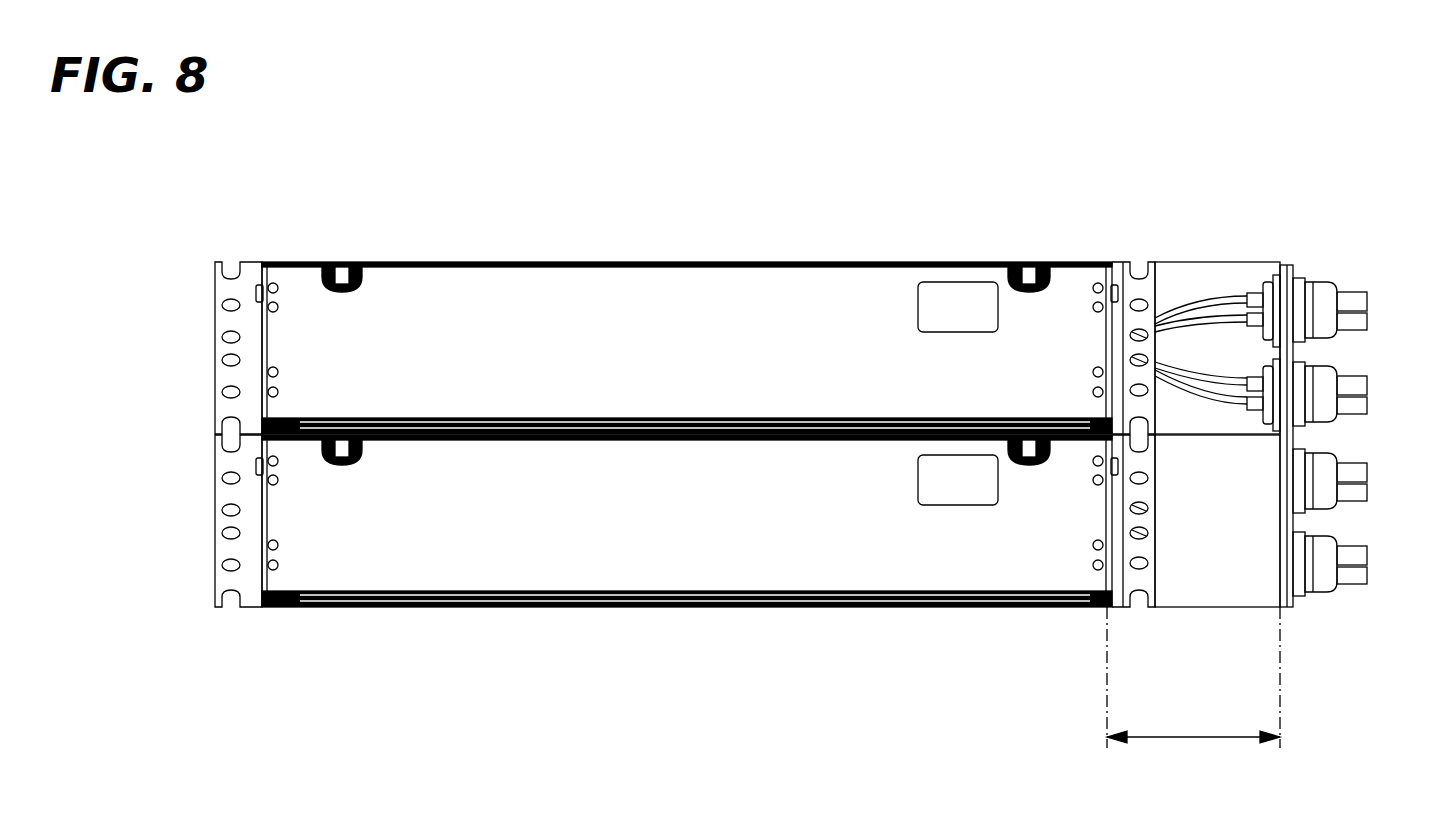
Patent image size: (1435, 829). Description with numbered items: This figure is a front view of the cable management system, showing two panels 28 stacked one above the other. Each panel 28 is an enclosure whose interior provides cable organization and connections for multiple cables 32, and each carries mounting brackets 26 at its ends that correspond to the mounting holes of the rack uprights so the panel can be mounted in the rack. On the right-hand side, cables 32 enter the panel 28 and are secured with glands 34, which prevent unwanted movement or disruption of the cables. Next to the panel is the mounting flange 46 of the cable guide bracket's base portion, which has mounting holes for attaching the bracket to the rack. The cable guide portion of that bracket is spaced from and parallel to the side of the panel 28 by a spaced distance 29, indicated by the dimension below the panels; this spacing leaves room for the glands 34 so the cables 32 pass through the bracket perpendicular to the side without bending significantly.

The mounting bracket 26 is at (228, 321).
The panel 28 is at (514, 292).
The spaced distance 29 is at (1193, 737).
The cable 32 is at (1205, 298).
The gland 34 is at (1320, 285).
The mounting flange 46 is at (1243, 282).